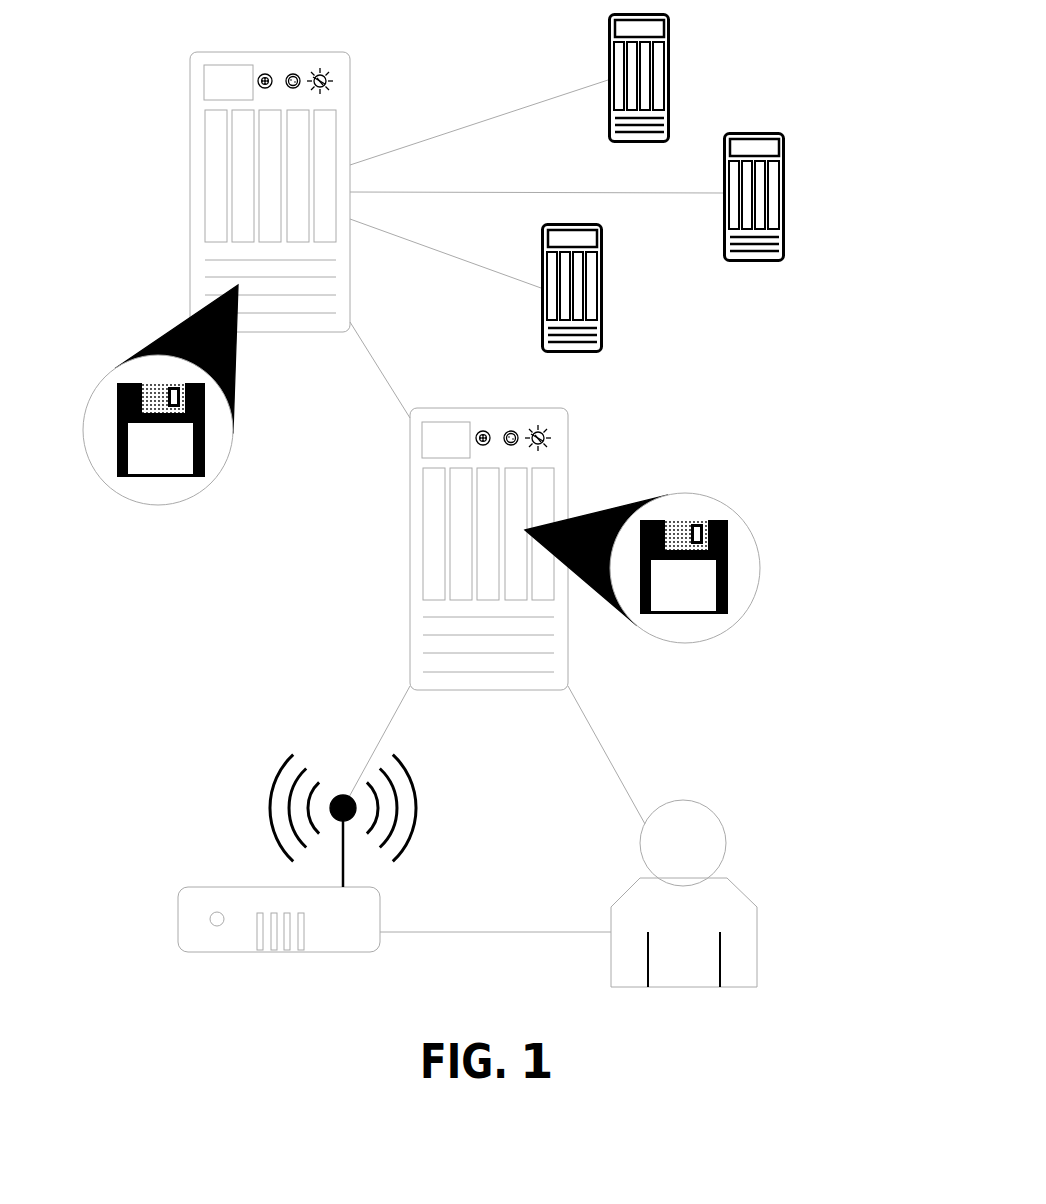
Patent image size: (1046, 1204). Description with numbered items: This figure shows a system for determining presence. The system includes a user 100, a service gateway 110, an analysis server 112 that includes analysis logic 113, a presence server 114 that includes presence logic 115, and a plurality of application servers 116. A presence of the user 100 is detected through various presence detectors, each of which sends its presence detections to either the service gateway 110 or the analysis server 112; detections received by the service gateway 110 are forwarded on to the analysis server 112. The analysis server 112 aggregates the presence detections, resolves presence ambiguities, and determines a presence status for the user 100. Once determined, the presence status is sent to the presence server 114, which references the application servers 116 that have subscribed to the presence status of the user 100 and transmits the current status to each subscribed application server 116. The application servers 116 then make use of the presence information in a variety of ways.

The user 100 is at (740, 893).
The service gateway 110 is at (265, 853).
The analysis server 112 is at (431, 549).
The analysis logic 113 is at (685, 563).
The presence server 114 is at (214, 181).
The presence logic 115 is at (129, 406).
The application servers 116 is at (722, 180).